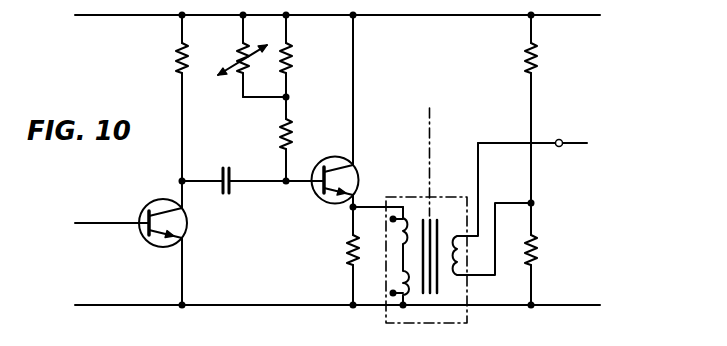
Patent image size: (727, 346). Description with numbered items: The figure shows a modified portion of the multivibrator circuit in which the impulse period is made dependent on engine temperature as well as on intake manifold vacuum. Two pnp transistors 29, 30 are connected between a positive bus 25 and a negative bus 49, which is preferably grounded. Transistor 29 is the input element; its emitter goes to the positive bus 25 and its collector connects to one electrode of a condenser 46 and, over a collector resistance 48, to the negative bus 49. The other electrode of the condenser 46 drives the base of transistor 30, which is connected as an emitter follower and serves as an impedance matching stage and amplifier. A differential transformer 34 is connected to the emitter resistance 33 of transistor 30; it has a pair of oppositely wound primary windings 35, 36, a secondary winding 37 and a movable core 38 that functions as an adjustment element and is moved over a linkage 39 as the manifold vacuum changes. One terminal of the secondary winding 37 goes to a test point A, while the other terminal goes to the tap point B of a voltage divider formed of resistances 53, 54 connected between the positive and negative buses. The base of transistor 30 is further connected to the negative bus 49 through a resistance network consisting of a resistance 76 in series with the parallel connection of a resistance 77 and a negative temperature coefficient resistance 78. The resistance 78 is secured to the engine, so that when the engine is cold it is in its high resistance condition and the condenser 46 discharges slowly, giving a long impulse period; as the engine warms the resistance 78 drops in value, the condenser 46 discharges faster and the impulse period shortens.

The positive bus 25 is at (222, 305).
The transistor 29 is at (186, 228).
The transistor 30 is at (351, 167).
The emitter resistance 33 is at (348, 250).
The differential transformer 34 is at (420, 198).
The primary winding 35 is at (391, 219).
The primary winding 36 is at (391, 292).
The secondary winding 37 is at (461, 271).
The movable core 38 is at (433, 215).
The linkage 39 is at (432, 118).
The condenser 46 is at (222, 168).
The collector resistance 48 is at (177, 60).
The negative bus 49 is at (410, 16).
The resistance 53 is at (538, 58).
The resistance 54 is at (538, 252).
The resistance 76 is at (290, 130).
The resistance 77 is at (290, 60).
The negative temperature coefficient resistance 78 is at (236, 56).
The test point A is at (560, 139).
The tap point B is at (534, 201).